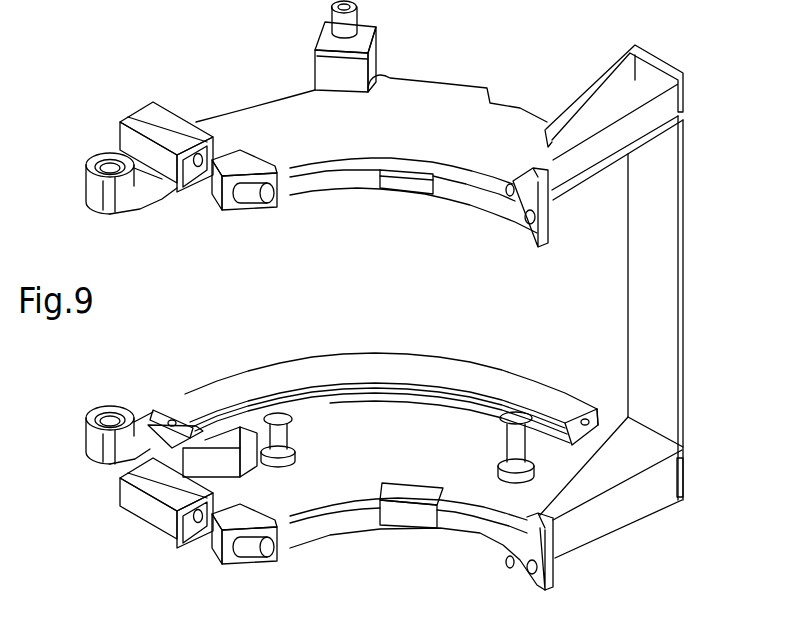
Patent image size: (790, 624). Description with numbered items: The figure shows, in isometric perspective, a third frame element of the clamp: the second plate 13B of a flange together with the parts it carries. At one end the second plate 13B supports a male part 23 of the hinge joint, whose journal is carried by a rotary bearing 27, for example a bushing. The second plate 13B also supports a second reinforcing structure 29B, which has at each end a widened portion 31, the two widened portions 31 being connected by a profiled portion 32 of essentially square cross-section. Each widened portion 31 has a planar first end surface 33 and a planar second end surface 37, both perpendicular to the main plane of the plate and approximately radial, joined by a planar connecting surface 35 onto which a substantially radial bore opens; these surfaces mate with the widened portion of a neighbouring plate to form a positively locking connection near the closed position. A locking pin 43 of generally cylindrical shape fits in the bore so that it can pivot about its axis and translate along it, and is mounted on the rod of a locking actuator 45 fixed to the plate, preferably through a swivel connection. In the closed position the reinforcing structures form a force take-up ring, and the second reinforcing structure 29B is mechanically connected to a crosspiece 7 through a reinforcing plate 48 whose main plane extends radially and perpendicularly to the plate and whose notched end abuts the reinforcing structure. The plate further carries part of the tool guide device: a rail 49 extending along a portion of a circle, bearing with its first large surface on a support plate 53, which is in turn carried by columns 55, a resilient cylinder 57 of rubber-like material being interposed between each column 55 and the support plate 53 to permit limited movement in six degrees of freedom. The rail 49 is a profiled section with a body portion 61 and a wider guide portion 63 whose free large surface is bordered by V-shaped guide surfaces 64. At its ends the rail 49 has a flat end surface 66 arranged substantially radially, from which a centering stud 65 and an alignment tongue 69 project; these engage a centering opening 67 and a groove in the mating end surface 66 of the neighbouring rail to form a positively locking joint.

The crosspiece 7 is at (668, 290).
The second plate 13B is at (462, 101).
The male part 23 is at (79, 192).
The rotary bearing 27 is at (96, 150).
The second reinforcing structure 29B is at (362, 190).
The widened portion 31 is at (264, 156).
The profiled portion 32 is at (462, 168).
The first end surface 33 is at (290, 203).
The connecting surface 35 is at (590, 557).
The second end surface 37 is at (215, 204).
The locking pin 43 is at (270, 253).
The locking actuator 45 is at (166, 113).
The reinforcing plate 48 is at (666, 100).
The rail 49 is at (438, 368).
The support plate 53 is at (363, 398).
The column 55 is at (288, 435).
The resilient cylinder 57 is at (285, 414).
The body portion 61 is at (389, 388).
The guide portion 63 is at (168, 418).
The guide surface 64 is at (523, 407).
The centering stud 65 is at (180, 424).
The flat end surface 66 is at (122, 468).
The centering opening 67 is at (588, 420).
The alignment tongue 69 is at (220, 452).